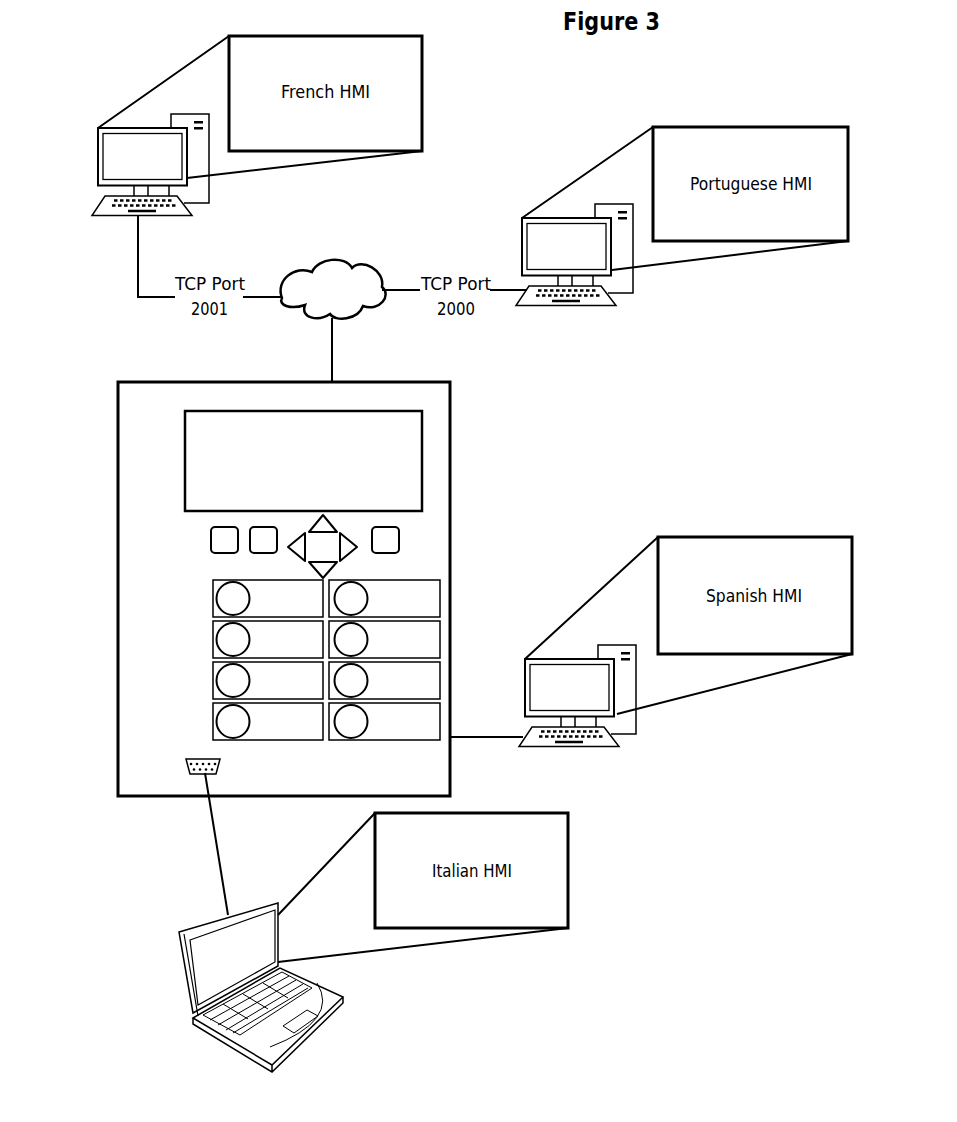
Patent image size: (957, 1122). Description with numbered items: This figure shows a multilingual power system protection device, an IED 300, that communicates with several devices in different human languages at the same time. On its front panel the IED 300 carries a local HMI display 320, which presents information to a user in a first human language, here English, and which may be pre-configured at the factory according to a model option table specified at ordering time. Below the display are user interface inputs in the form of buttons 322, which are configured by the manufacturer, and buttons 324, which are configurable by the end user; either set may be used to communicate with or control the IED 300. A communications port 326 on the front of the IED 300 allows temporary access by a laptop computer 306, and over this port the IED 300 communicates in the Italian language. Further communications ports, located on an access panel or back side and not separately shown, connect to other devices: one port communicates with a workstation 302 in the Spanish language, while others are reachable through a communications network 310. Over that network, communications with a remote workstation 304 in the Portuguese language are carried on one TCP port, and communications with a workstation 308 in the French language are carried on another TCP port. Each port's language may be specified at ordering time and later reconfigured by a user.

The IED 300 is at (195, 381).
The workstation 302 is at (522, 690).
The workstation 304 is at (518, 250).
The laptop computer 306 is at (193, 1008).
The workstation 308 is at (93, 161).
The communications network 310 is at (340, 260).
The local HMI display 320 is at (183, 433).
The buttons 322 is at (208, 539).
The buttons 324 is at (204, 651).
The communications port 326 is at (222, 768).